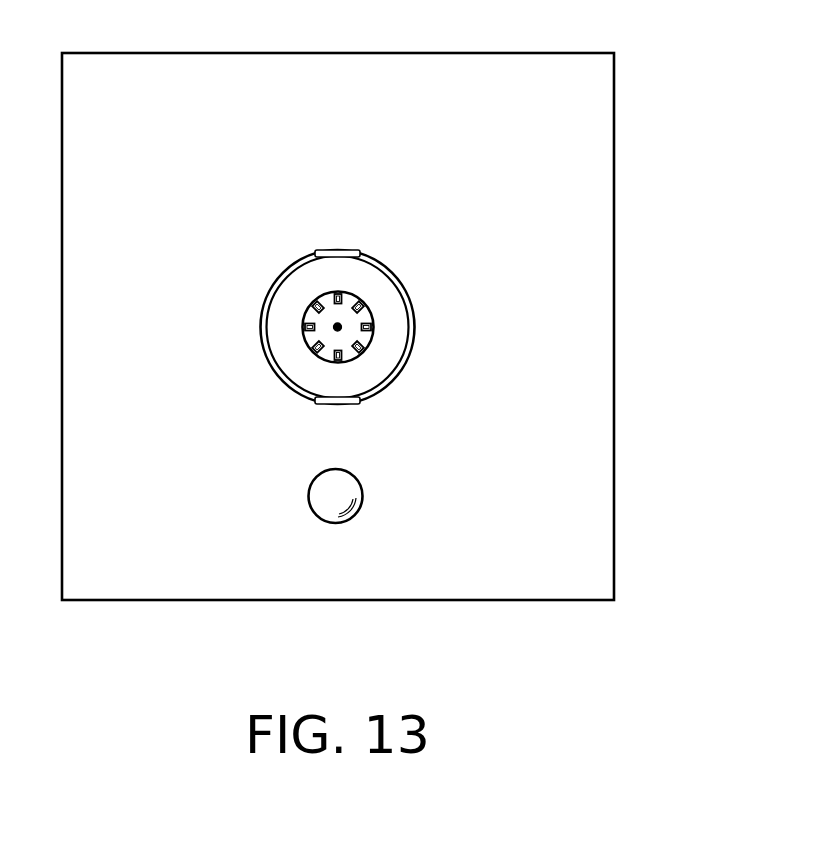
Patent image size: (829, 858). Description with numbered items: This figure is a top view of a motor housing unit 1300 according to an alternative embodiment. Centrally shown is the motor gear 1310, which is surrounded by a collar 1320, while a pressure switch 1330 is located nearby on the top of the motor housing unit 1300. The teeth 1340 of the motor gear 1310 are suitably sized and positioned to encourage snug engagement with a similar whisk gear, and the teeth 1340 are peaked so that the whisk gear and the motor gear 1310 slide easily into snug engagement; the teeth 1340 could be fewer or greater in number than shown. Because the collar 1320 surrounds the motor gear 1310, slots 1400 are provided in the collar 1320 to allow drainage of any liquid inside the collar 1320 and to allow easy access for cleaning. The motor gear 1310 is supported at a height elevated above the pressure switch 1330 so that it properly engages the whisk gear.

The motor housing unit 1300 is at (646, 173).
The motor gear 1310 is at (523, 327).
The collar 1320 is at (388, 388).
The pressure switch 1330 is at (345, 522).
The teeth 1340 is at (370, 321).
The slots 1400 is at (340, 250).